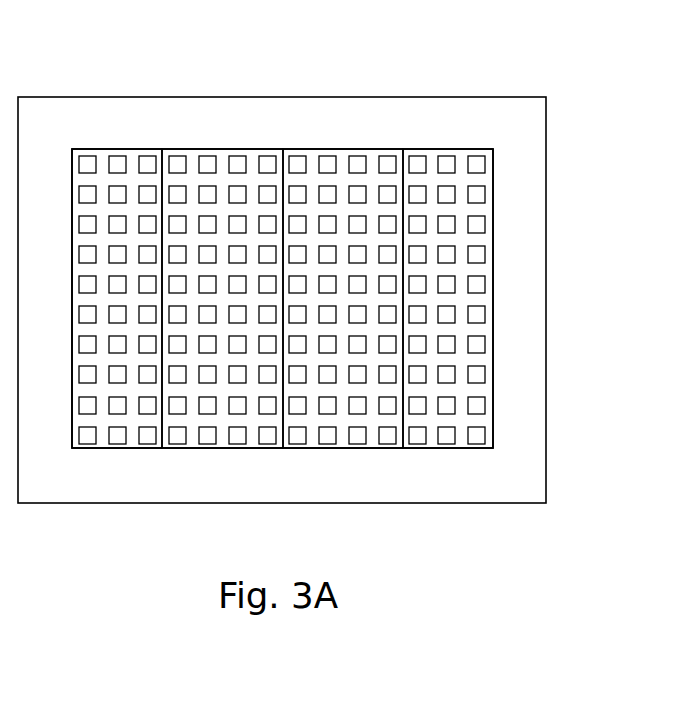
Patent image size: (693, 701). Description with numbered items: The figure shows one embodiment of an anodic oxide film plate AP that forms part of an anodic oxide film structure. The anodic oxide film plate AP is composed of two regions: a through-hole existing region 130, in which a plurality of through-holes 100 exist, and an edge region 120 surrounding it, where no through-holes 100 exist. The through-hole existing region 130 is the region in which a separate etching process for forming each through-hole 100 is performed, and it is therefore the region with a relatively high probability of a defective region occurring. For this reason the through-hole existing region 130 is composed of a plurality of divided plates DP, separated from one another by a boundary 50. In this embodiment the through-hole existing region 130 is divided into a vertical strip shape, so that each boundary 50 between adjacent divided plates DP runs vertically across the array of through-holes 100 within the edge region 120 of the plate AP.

The divided plate DP is at (100, 167).
The boundary 50 is at (342, 152).
The anodic oxide film plate AP is at (507, 63).
The edge region 120 is at (513, 134).
The through-hole existing region 130 is at (495, 272).
The through-hole 100 is at (473, 347).